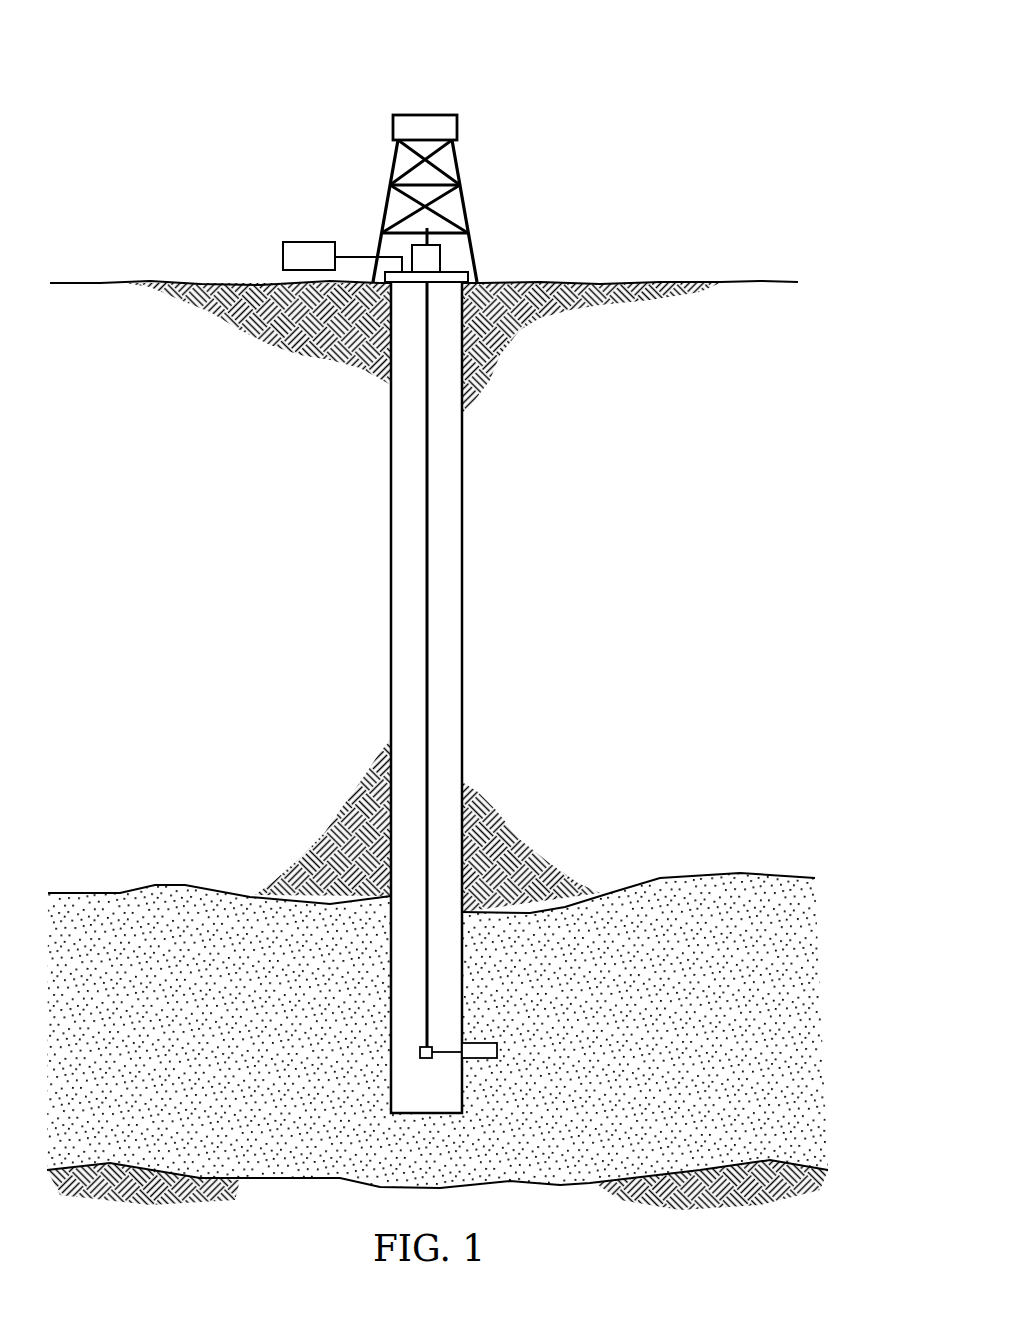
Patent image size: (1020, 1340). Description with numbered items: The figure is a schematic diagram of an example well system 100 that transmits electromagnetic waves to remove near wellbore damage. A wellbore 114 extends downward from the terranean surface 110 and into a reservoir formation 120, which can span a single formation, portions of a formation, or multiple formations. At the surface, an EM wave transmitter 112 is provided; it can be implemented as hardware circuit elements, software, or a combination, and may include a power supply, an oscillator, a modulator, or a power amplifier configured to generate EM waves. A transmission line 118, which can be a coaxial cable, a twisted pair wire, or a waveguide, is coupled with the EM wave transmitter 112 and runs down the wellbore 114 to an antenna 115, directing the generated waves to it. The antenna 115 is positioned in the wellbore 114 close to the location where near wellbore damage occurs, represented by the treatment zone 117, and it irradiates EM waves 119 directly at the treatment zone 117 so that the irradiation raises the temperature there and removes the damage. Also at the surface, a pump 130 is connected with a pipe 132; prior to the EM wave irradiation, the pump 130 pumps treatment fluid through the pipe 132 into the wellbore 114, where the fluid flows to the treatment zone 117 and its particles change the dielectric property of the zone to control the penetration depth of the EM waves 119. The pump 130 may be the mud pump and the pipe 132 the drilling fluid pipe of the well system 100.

The well system 100 is at (304, 71).
The terranean surface 110 is at (240, 280).
The EM wave transmitter 112 is at (441, 260).
The wellbore 114 is at (392, 538).
The antenna 115 is at (428, 1060).
The treatment zone 117 is at (485, 1060).
The transmission line 118 is at (428, 588).
The EM waves 119 is at (435, 1043).
The reservoir formation 120 is at (657, 890).
The pump 130 is at (298, 242).
The pipe 132 is at (352, 255).